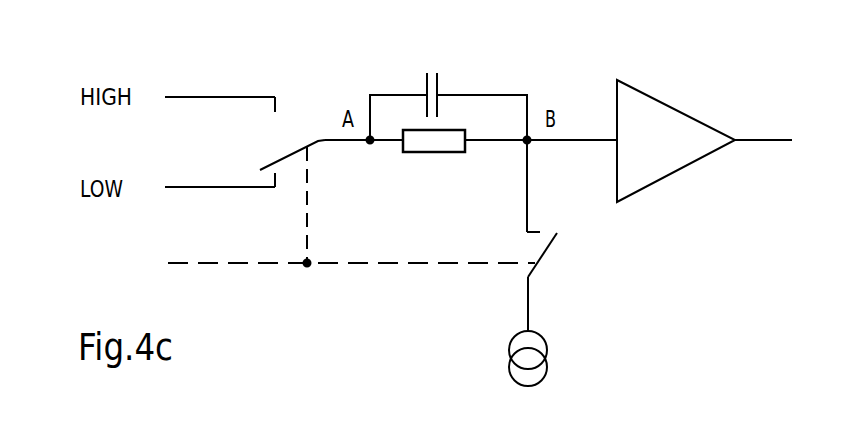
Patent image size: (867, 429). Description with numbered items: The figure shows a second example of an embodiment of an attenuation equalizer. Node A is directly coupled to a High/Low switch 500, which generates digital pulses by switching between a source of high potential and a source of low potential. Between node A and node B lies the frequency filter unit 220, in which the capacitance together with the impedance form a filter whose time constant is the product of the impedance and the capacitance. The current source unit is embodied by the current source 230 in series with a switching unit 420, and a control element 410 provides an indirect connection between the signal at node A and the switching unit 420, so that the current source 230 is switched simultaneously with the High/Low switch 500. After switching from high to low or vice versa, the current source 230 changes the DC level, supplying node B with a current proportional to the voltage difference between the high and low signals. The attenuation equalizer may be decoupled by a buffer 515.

The frequency filter unit 220 is at (474, 75).
The High/Low switch 500 is at (280, 162).
The buffer 515 is at (688, 113).
The switching unit 420 is at (548, 250).
The control element 410 is at (377, 265).
The current source 230 is at (550, 352).